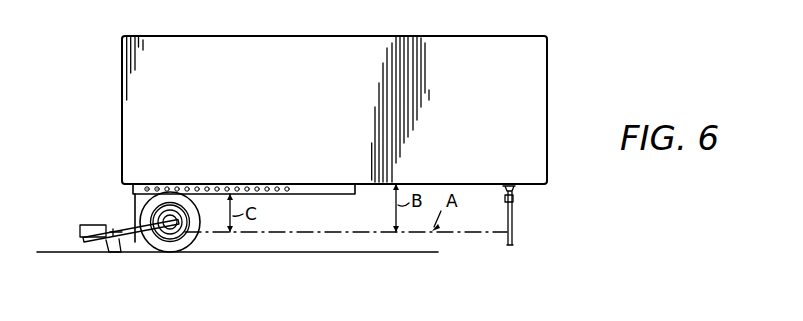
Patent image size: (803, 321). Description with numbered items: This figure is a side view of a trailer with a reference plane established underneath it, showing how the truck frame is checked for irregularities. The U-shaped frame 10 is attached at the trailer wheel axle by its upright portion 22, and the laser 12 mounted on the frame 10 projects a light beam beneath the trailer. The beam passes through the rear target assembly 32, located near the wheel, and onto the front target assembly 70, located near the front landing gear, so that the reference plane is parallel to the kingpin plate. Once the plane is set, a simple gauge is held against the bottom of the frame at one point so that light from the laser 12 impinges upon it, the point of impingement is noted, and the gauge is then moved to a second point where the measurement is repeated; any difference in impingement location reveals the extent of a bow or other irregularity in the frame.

The U-shaped frame 10 is at (107, 210).
The laser 12 is at (86, 225).
The upright portion 22 is at (110, 245).
The rear target assembly 32 is at (133, 212).
The front target assembly 70 is at (524, 215).